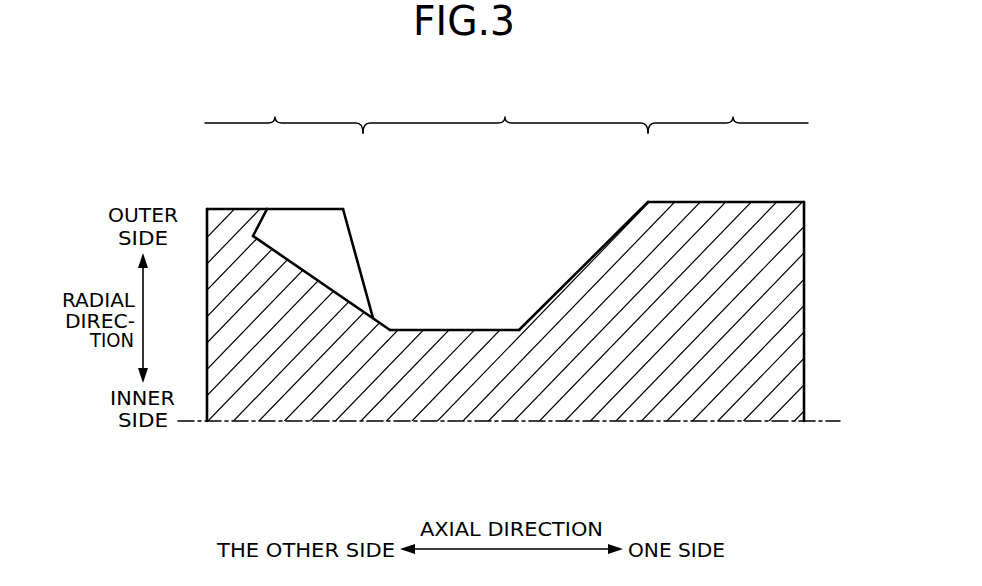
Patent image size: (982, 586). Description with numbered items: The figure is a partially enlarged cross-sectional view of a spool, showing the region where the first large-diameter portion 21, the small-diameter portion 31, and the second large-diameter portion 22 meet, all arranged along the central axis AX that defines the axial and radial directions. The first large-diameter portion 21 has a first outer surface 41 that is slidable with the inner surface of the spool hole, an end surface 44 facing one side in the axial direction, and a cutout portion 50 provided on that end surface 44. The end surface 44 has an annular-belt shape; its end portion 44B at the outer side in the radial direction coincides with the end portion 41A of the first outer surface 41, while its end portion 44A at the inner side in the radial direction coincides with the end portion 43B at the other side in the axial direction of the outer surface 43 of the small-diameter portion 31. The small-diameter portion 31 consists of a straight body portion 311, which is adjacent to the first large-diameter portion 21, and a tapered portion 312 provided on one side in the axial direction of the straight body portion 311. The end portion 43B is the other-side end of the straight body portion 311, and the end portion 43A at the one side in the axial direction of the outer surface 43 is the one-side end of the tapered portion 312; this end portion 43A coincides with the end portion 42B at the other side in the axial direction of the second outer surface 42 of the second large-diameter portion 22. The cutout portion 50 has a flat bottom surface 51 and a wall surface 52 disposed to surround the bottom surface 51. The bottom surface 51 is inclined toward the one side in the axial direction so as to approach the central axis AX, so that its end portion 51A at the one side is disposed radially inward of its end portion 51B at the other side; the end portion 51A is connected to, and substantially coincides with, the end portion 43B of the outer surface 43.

The first large-diameter portion 21 is at (284, 257).
The small-diameter portion 31 is at (495, 211).
The second large-diameter portion 22 is at (728, 257).
The first outer surface 41 is at (228, 208).
The end portion at the other side in the axial direction of the bottom surface 51B is at (254, 235).
The end portion at one side in the axial direction of the first outer surface 41A is at (343, 209).
The end portion at the outer side in the radial direction of the end surface 44B is at (343, 188).
The end surface 44 is at (347, 218).
The cutout portion 50 is at (340, 256).
The wall surface 52 is at (352, 285).
The outer surface of the small-diameter portion 43 is at (463, 330).
The straight body portion 311 is at (498, 318).
The tapered portion 312 is at (598, 236).
The end portion at the one side in the axial direction of the outer surface 43A is at (646, 202).
The end portion at the other side in the axial direction of the second outer surface 42B is at (649, 202).
The second outer surface 42 is at (733, 202).
The bottom surface 51 is at (302, 267).
The end portion at one side in the axial direction of the bottom surface 51A is at (372, 318).
The end portion at the other side in the axial direction of the outer surface 43B is at (400, 330).
The end portion at the inner side in the radial direction of the end surface 44A is at (410, 409).
The central axis AX is at (825, 425).